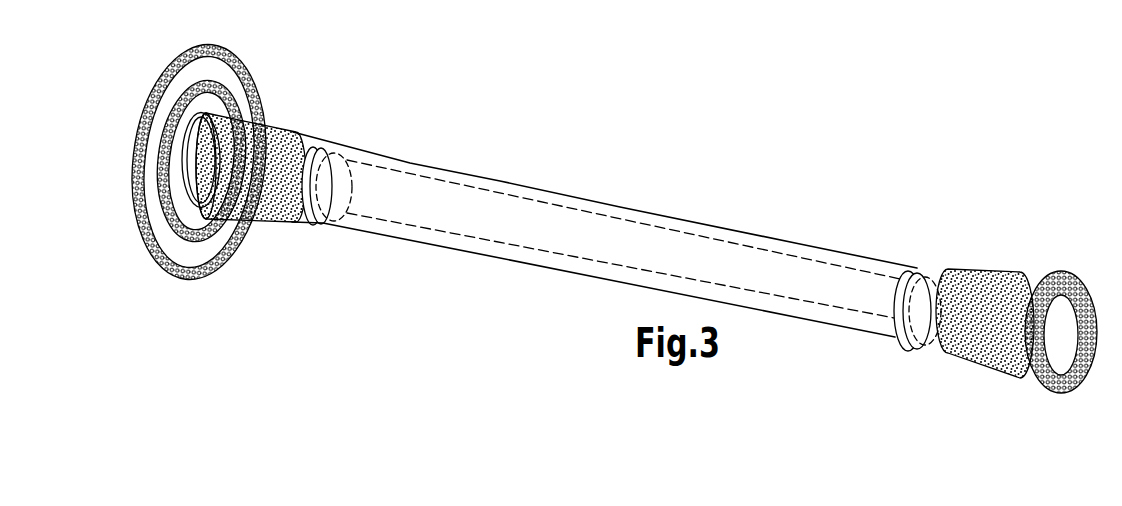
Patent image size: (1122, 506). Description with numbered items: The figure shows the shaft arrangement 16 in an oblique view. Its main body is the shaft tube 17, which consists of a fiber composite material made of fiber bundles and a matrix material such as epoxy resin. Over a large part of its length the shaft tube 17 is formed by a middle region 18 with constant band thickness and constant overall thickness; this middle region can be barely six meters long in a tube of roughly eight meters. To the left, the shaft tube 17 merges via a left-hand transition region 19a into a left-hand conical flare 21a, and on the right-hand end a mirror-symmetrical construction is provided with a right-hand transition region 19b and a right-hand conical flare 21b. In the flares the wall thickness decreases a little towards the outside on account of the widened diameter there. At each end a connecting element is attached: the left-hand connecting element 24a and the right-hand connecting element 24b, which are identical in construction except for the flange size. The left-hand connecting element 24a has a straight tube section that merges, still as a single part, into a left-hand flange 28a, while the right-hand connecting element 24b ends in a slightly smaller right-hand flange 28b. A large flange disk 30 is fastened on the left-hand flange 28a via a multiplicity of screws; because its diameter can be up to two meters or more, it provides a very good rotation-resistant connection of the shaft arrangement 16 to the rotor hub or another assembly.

The shaft arrangement 16 is at (621, 198).
The shaft tube 17 is at (524, 191).
The middle region 18 is at (596, 190).
The left-hand transition region 19a is at (349, 143).
The right-hand transition region 19b is at (923, 255).
The left-hand conical flare 21a is at (314, 131).
The right-hand conical flare 21b is at (937, 261).
The left-hand connecting element 24a is at (271, 101).
The right-hand connecting element 24b is at (1043, 260).
The left-hand flange 28a is at (224, 84).
The right-hand flange 28b is at (1073, 270).
The flange disk 30 is at (228, 47).